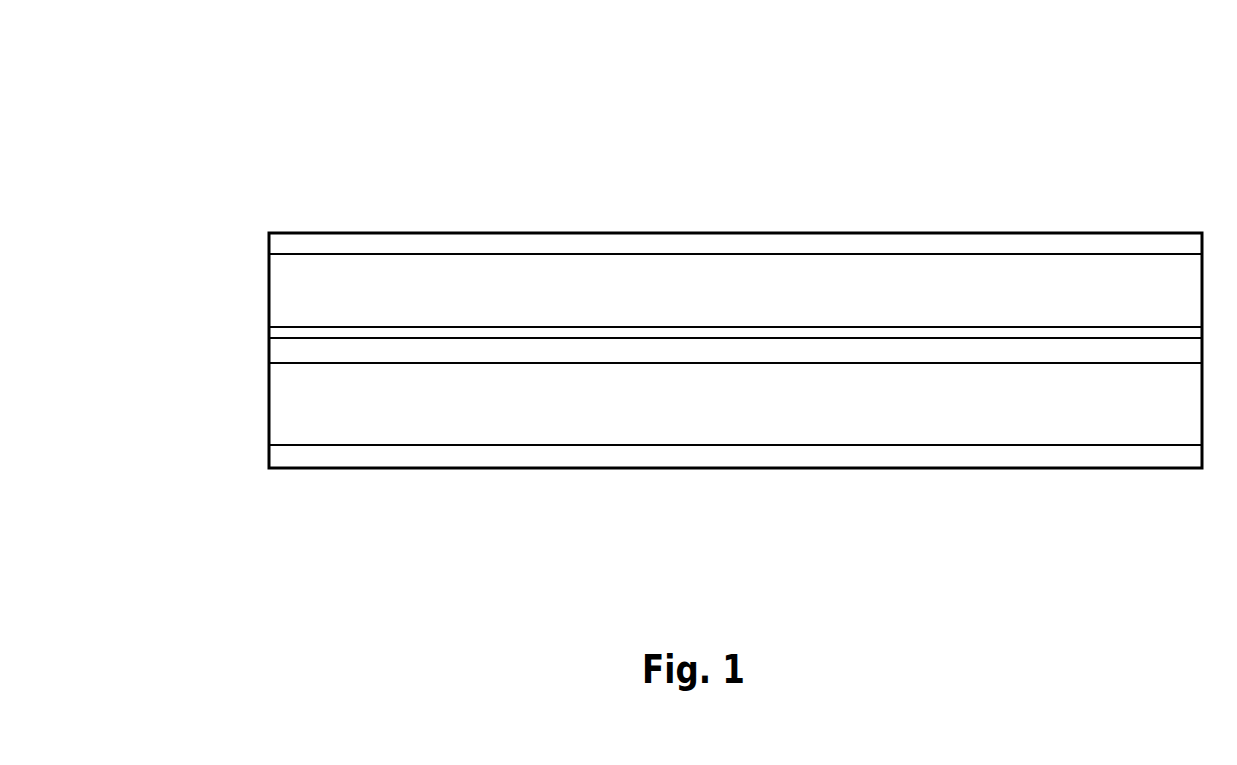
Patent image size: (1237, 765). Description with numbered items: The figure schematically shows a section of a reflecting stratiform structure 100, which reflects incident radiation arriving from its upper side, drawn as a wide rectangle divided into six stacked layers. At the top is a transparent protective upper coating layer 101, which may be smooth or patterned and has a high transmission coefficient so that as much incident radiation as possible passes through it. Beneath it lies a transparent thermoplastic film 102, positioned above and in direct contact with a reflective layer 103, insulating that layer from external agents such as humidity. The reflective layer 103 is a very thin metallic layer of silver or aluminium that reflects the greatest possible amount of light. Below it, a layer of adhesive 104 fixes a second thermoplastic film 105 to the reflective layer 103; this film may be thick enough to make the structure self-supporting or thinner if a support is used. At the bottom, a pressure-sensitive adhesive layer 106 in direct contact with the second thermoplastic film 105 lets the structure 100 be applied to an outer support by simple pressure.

The reflecting stratiform structure 100 is at (712, 217).
The transparent protective upper coating layer 101 is at (279, 250).
The transparent thermoplastic film 102 is at (279, 285).
The reflective layer 103 is at (279, 322).
The layer of adhesive 104 is at (279, 357).
The second thermoplastic film 105 is at (279, 406).
The pressure-sensitive adhesive layer 106 is at (279, 454).